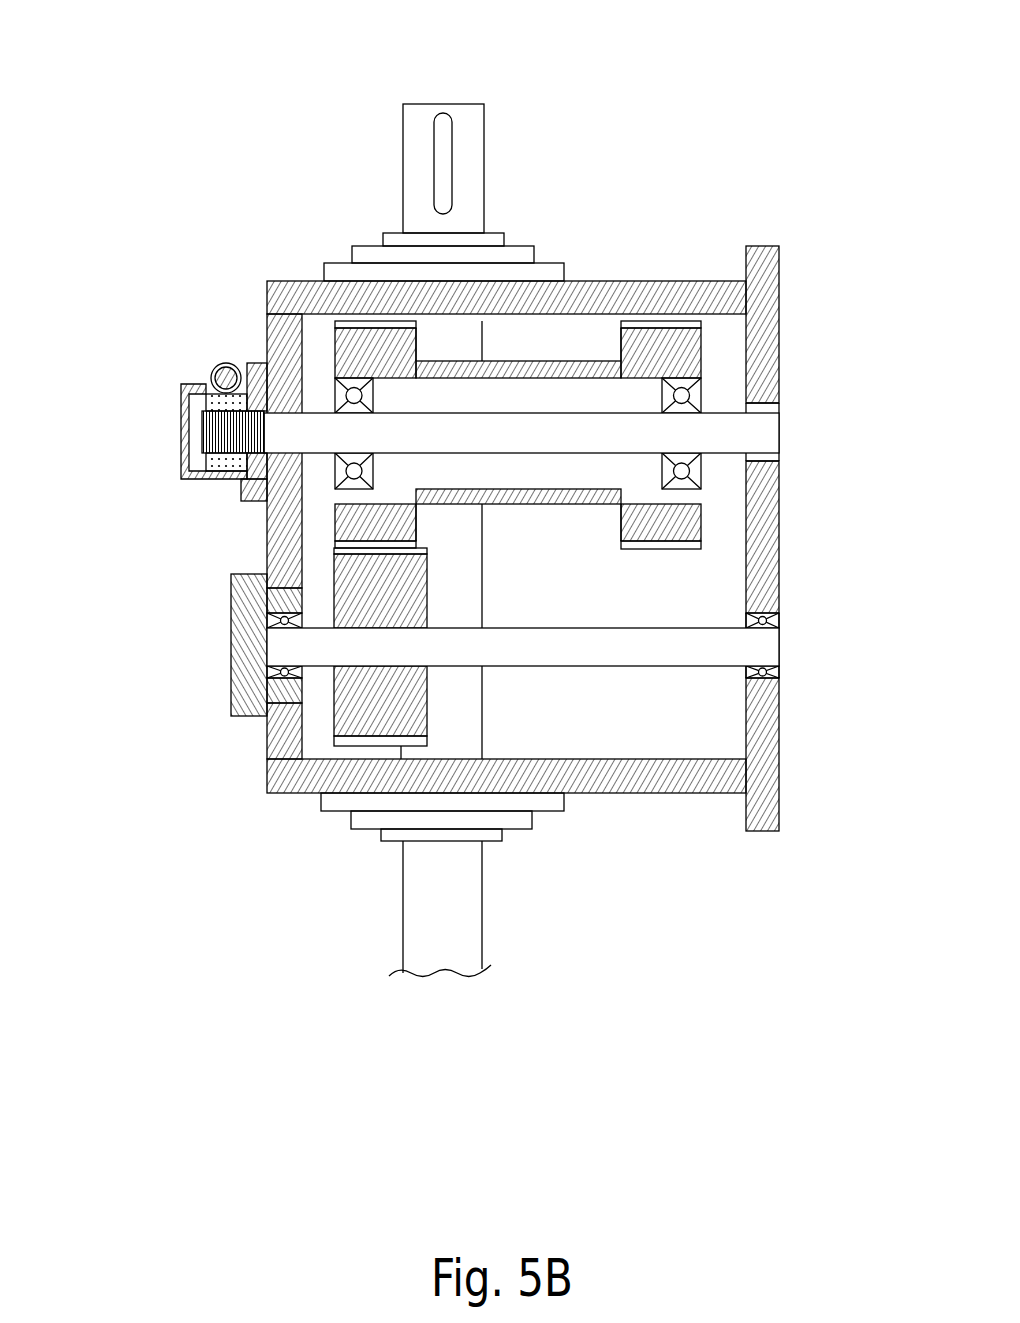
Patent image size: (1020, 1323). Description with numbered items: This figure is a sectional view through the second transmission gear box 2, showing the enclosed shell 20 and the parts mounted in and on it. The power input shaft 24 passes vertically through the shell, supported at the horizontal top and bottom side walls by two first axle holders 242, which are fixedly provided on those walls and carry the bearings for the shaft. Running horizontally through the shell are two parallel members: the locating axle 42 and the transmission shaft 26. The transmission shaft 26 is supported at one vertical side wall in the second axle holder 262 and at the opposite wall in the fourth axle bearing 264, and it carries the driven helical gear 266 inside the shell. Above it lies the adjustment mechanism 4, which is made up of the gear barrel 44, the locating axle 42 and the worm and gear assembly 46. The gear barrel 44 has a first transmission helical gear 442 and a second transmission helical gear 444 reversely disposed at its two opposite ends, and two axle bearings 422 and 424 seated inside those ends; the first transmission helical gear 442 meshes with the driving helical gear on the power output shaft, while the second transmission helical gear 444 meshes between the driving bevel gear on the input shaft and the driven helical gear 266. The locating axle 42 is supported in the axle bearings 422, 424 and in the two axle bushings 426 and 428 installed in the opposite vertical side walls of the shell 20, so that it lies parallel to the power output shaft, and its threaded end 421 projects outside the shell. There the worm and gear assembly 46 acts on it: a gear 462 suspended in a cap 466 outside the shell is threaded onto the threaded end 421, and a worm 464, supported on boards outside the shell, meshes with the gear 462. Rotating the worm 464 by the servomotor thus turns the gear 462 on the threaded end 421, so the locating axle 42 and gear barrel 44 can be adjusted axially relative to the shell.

The second transmission gear box 2 is at (803, 208).
The shell 20 is at (688, 300).
The power input shaft 24 is at (426, 112).
The first axle holders 242 is at (514, 243).
The transmission shaft 26 is at (766, 653).
The second axle holder 262 is at (250, 663).
The fourth axle bearing 264 is at (749, 618).
The driven helical gear 266 is at (357, 710).
The adjustment mechanism 4 is at (528, 525).
The locating axle 42 is at (766, 437).
The threaded end 421 is at (225, 430).
The axle bearing 422 is at (267, 517).
The axle bearing 424 is at (672, 515).
The axle bushing 426 is at (280, 402).
The axle bushing 428 is at (768, 408).
The gear barrel 44 is at (594, 348).
The first transmission helical gear 442 is at (672, 343).
The second transmission helical gear 444 is at (338, 332).
The worm and gear assembly 46 is at (194, 368).
The gear 462 is at (227, 470).
The worm 464 is at (222, 365).
The cap 466 is at (182, 388).